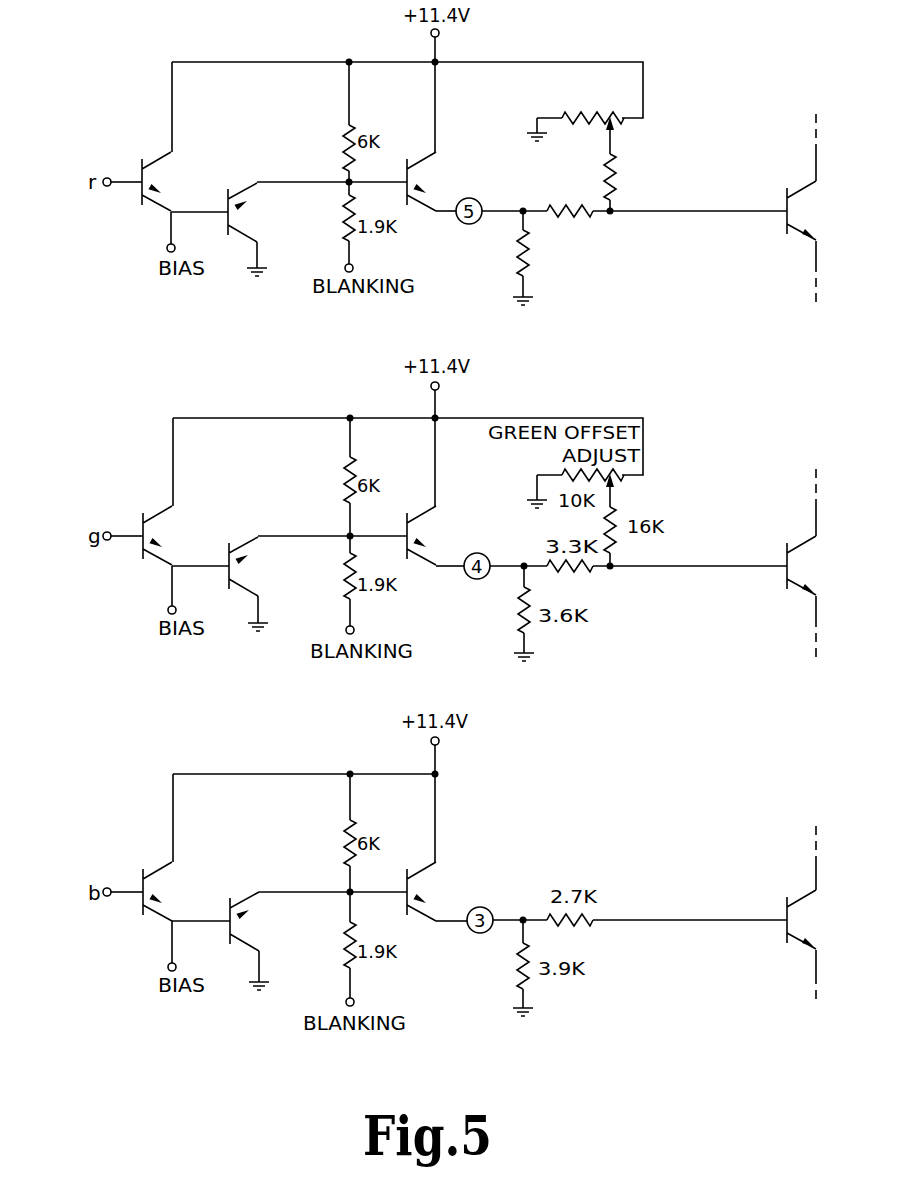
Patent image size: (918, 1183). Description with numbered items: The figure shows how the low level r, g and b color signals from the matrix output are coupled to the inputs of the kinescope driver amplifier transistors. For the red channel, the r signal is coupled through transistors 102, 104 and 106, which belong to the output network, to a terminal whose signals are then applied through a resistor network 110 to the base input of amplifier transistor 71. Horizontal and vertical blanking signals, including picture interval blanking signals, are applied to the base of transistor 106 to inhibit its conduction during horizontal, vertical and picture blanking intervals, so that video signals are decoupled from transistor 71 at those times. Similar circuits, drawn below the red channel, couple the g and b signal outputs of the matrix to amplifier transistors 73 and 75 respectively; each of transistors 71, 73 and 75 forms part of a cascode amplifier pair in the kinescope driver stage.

The transistor 102 is at (190, 192).
The transistor 104 is at (273, 224).
The transistor 106 is at (450, 191).
The resistor network 110 is at (645, 277).
The transistor 71 is at (815, 223).
The transistor 73 is at (822, 579).
The transistor 75 is at (822, 931).